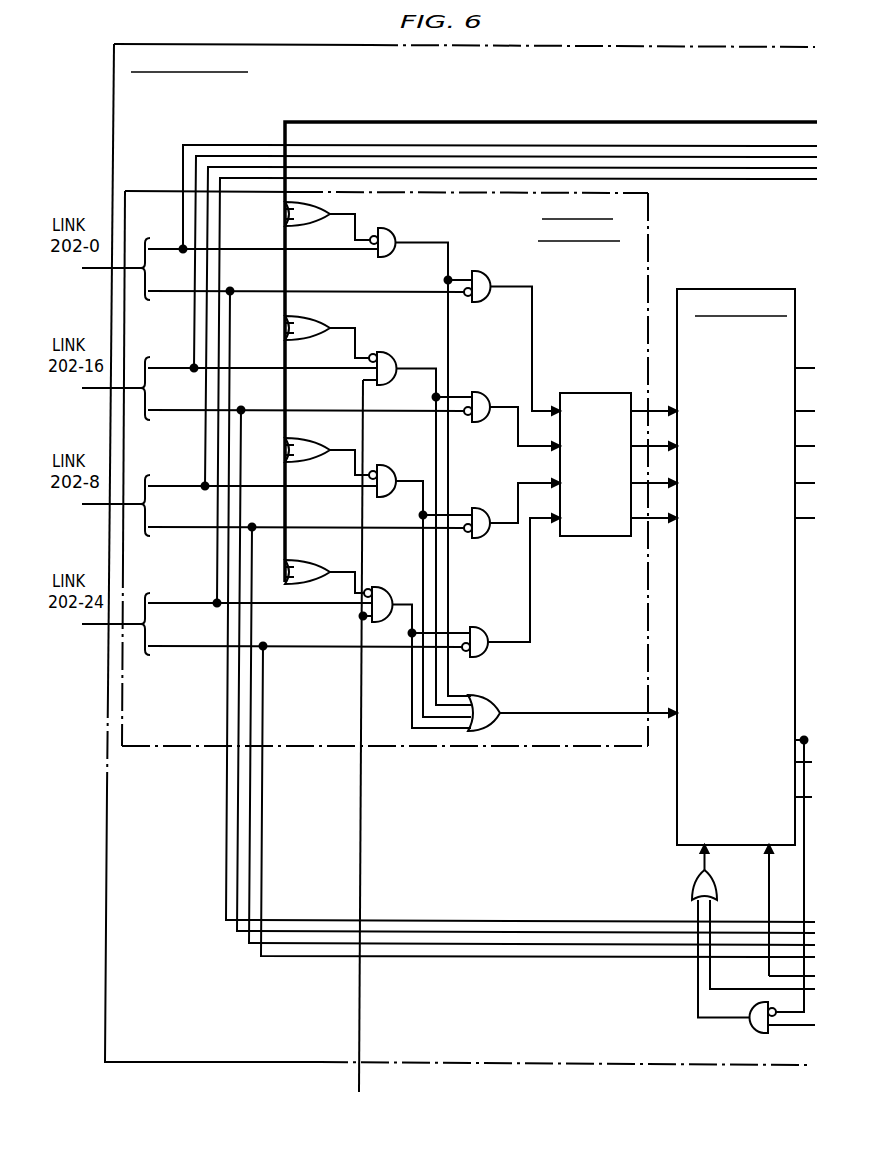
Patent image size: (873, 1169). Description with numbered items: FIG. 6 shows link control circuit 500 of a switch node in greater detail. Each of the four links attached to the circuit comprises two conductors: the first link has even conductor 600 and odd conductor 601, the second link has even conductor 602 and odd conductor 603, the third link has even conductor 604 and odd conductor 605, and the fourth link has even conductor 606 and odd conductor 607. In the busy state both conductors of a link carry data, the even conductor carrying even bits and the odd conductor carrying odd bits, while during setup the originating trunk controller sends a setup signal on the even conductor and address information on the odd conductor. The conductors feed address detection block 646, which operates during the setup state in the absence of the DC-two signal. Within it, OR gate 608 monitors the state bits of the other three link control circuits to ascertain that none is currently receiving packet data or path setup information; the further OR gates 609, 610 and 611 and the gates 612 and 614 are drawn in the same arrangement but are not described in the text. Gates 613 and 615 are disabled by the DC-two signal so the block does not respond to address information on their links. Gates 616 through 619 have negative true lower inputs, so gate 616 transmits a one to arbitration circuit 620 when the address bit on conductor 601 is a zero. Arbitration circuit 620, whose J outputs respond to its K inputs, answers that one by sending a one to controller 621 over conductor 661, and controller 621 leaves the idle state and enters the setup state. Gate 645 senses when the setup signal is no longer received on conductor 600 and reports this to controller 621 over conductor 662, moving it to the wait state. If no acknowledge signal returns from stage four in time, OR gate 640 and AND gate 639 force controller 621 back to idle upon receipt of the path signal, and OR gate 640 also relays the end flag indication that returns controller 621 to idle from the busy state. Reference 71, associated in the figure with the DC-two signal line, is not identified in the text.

The link control circuit 500 is at (270, 44).
The address detection block 646 is at (650, 236).
The conductor 600 is at (188, 246).
The conductor 601 is at (198, 294).
The conductor 602 is at (188, 362).
The conductor 603 is at (196, 412).
The conductor 604 is at (196, 480).
The conductor 605 is at (200, 530).
The conductor 606 is at (198, 600).
The conductor 607 is at (198, 648).
The OR gate 608 is at (323, 214).
The OR gate 609 is at (322, 321).
The OR gate 610 is at (322, 445).
The OR gate 611 is at (318, 556).
The AND gate I'00 612 is at (386, 227).
The gate 613 is at (386, 351).
The AND gate I'20 614 is at (382, 464).
The gate 615 is at (376, 586).
The gate 616 is at (490, 282).
The gate 617 is at (477, 389).
The gate 618 is at (474, 505).
The gate 619 is at (472, 622).
The arbitration circuit 620 is at (590, 541).
The controller 621 is at (765, 289).
The AND gate 639 is at (750, 1034).
The OR gate 640 is at (690, 888).
The gate 645 is at (494, 700).
The conductor 661 is at (640, 404).
The conductor 662 is at (581, 712).
The DC2 line 71 is at (362, 1082).